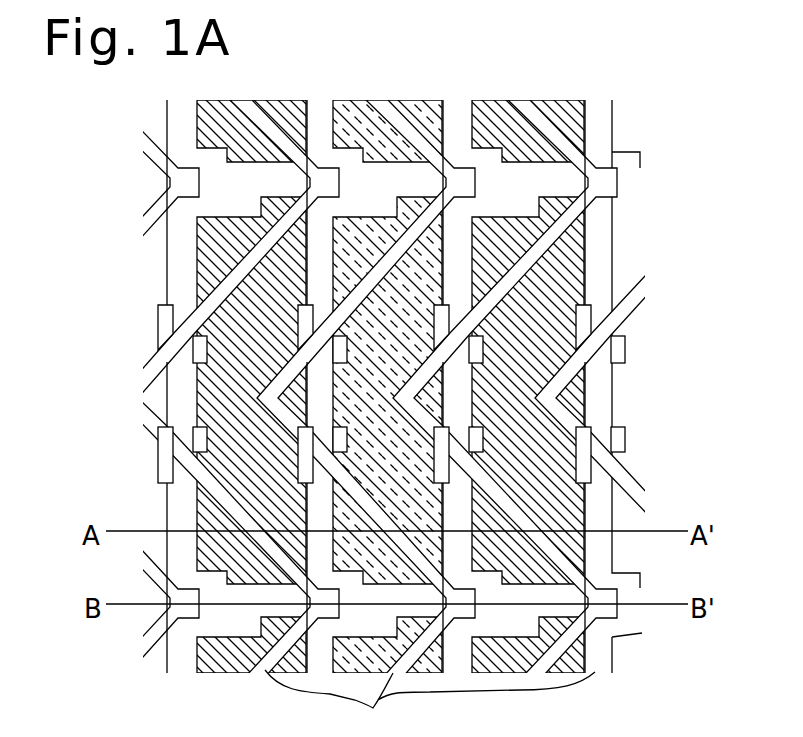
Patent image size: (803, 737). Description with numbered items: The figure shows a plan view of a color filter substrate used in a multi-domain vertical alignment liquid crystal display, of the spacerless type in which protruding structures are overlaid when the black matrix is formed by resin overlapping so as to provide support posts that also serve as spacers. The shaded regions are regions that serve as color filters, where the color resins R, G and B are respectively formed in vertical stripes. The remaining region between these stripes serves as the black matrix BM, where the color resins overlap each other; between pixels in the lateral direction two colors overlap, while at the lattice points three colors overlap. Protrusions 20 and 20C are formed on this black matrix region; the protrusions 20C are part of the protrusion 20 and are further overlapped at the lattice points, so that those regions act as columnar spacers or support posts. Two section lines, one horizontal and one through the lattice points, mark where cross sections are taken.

The red color resin R is at (236, 222).
The green color resin G is at (374, 222).
The blue color resin B is at (511, 222).
The protrusion 20C is at (618, 173).
The black matrix BM is at (607, 208).
The protrusion 20 is at (430, 703).